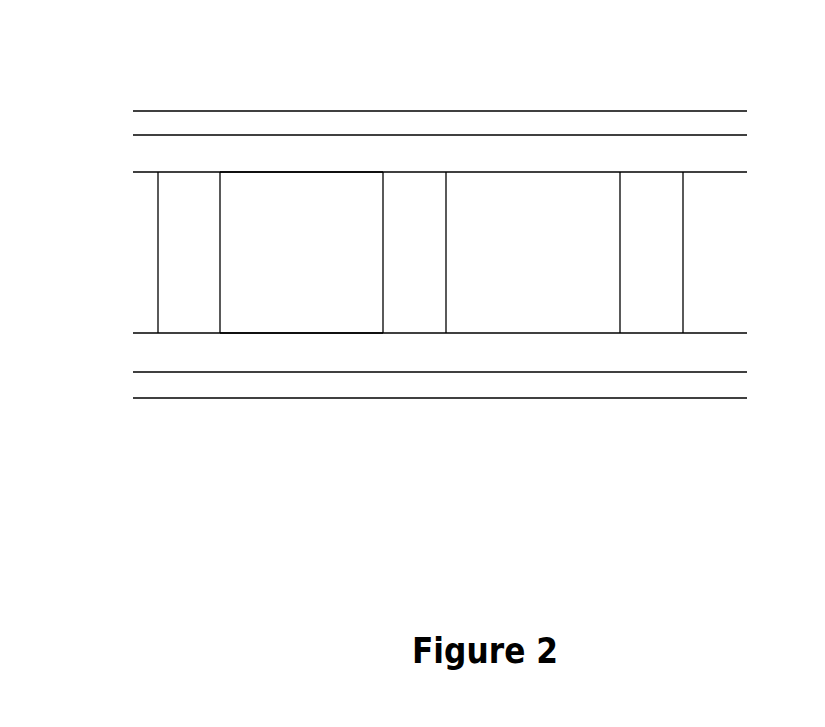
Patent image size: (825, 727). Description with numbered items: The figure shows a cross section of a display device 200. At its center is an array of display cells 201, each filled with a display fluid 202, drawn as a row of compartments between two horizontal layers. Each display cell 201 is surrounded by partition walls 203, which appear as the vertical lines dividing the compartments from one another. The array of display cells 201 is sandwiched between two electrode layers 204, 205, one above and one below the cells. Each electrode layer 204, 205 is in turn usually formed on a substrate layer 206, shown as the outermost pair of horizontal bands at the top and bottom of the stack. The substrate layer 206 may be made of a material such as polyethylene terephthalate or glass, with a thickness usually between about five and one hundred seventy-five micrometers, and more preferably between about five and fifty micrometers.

The display device 200 is at (434, 258).
The display cell 201 is at (260, 248).
The display fluid 202 is at (272, 285).
The partition wall 203 is at (422, 285).
The electrode layer 204 is at (608, 157).
The electrode layer 205 is at (546, 346).
The substrate layer 206 is at (533, 120).